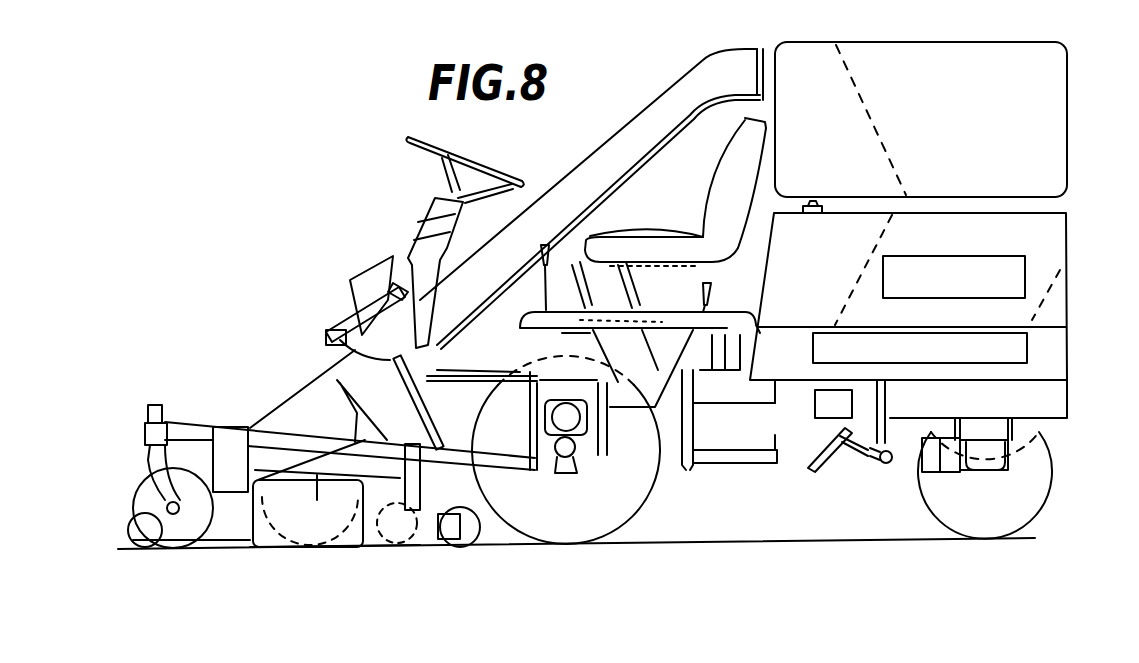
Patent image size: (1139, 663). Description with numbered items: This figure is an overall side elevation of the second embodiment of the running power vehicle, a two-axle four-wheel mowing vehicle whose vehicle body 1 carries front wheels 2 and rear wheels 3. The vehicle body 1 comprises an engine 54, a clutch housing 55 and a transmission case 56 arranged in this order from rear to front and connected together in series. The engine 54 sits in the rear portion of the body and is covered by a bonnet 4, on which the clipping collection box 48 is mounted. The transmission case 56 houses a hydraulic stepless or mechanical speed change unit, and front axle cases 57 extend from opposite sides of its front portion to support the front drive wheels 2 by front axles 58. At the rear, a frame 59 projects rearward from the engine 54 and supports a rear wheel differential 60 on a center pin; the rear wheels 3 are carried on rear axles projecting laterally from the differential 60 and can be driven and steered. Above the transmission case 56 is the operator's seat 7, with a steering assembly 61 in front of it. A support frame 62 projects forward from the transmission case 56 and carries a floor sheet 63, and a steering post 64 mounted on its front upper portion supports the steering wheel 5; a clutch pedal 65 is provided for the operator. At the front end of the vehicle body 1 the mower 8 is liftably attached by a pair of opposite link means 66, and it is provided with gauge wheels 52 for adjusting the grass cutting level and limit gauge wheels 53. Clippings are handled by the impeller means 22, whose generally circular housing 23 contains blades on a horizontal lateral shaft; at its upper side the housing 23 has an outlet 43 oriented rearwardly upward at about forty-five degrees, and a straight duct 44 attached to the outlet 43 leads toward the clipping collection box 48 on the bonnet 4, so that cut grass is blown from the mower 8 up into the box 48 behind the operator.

The vehicle body 1 is at (790, 465).
The front wheels 2 is at (640, 490).
The rear wheels 3 is at (1040, 480).
The bonnet 4 is at (1060, 236).
The steering wheel 5 is at (494, 180).
The operator's seat 7 is at (708, 206).
The mower 8 is at (290, 560).
The impeller means 22 is at (272, 408).
The housing 23 is at (250, 428).
The outlet 43 is at (340, 372).
The straight duct 44 is at (585, 168).
The clipping collection box 48 is at (890, 48).
The gauge wheels 52 is at (170, 545).
The limit gauge wheels 53 is at (455, 548).
The engine 54 is at (872, 462).
The clutch housing 55 is at (826, 472).
The transmission case 56 is at (690, 470).
The front axle cases 57 is at (580, 458).
The front axles 58 is at (565, 460).
The frame 59 is at (1070, 396).
The rear wheel differential 60 is at (985, 475).
The steering assembly 61 is at (408, 225).
The support frame 62 is at (328, 333).
The floor sheet 63 is at (471, 360).
The steering post 64 is at (378, 275).
The clutch pedal 65 is at (432, 292).
The link means 66 is at (308, 513).